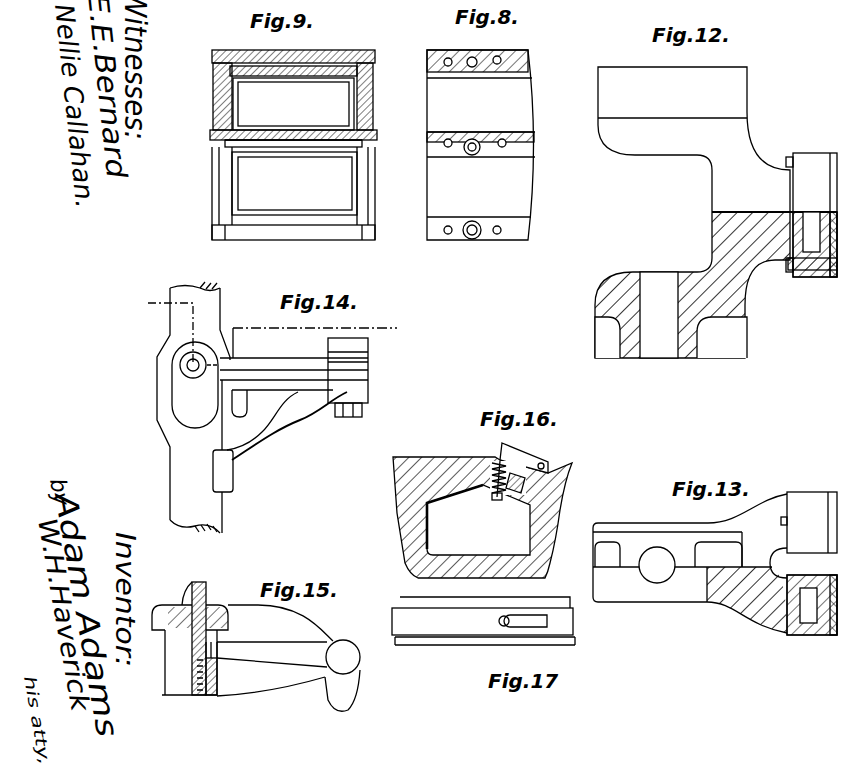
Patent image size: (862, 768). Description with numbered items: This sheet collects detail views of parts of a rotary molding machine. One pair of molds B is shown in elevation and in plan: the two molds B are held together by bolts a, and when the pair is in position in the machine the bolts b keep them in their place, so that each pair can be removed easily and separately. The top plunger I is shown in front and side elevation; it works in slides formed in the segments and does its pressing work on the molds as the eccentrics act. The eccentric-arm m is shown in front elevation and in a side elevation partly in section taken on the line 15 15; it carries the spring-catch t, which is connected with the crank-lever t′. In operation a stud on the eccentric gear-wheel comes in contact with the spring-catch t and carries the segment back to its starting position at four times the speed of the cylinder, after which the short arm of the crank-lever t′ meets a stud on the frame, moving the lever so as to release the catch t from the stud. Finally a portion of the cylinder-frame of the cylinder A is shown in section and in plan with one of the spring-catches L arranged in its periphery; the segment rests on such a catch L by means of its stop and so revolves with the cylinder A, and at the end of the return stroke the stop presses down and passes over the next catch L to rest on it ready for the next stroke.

In FIG. 9, the bolts a is at (215, 55).
In FIG. 8, the bolts a is at (471, 68).
In FIG. 8, the bolts b is at (446, 58).
In FIG. 9, the molds B is at (293, 151).
In FIG. 8, the molds B is at (481, 145).
In FIG. 12, the top plunger I is at (716, 212).
In FIG. 13, the top plunger I is at (715, 557).
In FIG. 14, the section line 15 is at (276, 328).
In FIG. 15, the spring-catch t is at (206, 588).
In FIG. 14, the crank-lever t′ is at (294, 394).
In FIG. 15, the crank-lever t′ is at (275, 650).
In FIG. 14, the arm m is at (195, 407).
In FIG. 15, the arm m is at (189, 638).
In FIG. 16, the cylinder A is at (482, 517).
In FIG. 17, the cylinder A is at (483, 616).
In FIG. 16, the spring-catch L is at (519, 466).
In FIG. 17, the spring-catch L is at (547, 620).